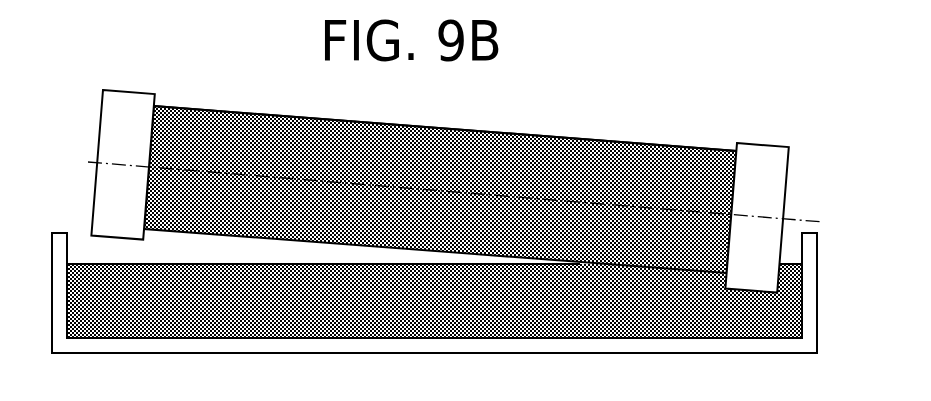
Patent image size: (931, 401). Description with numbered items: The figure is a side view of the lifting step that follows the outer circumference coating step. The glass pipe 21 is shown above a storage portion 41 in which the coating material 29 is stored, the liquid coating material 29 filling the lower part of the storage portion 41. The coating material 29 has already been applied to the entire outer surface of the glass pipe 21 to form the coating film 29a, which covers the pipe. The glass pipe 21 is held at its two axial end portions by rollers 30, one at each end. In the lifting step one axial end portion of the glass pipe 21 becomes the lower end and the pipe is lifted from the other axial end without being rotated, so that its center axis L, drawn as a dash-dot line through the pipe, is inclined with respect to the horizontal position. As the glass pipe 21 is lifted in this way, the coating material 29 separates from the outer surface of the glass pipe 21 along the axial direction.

The glass pipe 21 is at (412, 146).
The coating material 29 is at (443, 336).
The coating film 29a is at (534, 152).
The roller 30 is at (131, 108).
The storage portion 41 is at (61, 237).
The center axis L is at (124, 162).